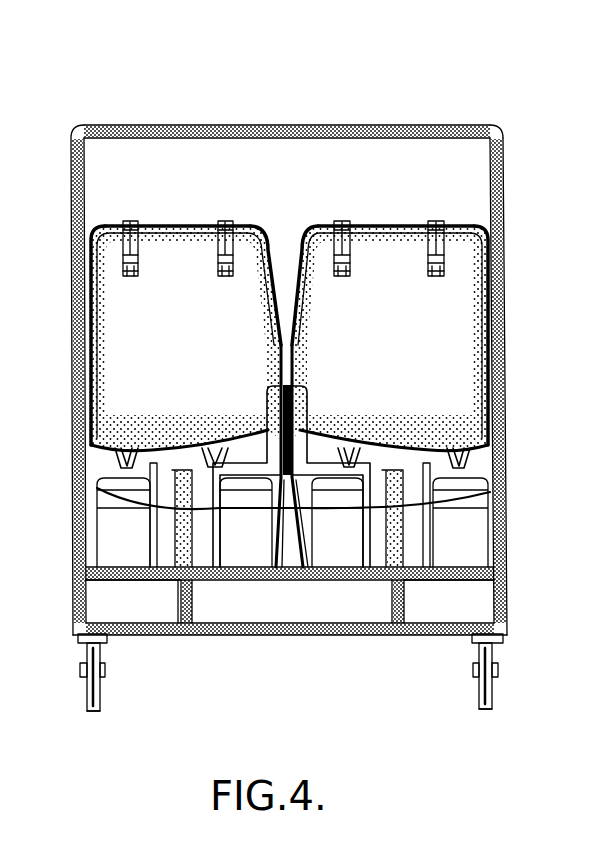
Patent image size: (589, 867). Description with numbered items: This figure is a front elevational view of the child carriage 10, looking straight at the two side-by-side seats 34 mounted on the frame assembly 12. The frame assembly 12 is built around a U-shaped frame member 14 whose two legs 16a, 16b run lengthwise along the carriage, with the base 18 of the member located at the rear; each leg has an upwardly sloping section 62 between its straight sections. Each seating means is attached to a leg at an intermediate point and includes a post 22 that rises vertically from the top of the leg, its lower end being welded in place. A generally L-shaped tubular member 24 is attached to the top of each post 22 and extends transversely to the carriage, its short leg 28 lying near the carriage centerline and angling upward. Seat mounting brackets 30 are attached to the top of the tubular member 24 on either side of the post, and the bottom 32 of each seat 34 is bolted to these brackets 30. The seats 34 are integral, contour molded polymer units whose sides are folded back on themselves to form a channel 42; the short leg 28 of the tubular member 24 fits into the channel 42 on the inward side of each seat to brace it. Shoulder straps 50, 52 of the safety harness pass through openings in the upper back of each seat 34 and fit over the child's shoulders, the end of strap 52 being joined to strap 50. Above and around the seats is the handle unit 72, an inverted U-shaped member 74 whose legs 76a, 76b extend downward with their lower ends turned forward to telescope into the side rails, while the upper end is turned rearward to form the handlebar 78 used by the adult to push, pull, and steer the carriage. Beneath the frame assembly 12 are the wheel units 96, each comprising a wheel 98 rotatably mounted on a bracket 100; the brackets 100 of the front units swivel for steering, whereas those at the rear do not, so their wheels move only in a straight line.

The seating unit assembly 10 is at (306, 98).
The frame assembly 12 is at (294, 672).
The U-shaped frame member 14 is at (295, 595).
The leg 16a is at (418, 580).
The leg 16b is at (180, 574).
The base 18 is at (362, 582).
The post 22 is at (97, 493).
The tubular member 24 is at (253, 500).
The short leg 28 is at (268, 400).
The seat mounting bracket 30 is at (210, 447).
The seat bottom 32 is at (181, 222).
The seat 34 is at (125, 315).
The channel 42 is at (279, 384).
The strap 50 is at (225, 220).
The strap 52 is at (125, 220).
The upwardly sloping section 62 is at (178, 612).
The handle unit 72 is at (192, 100).
The inverted U-shaped member 74 is at (369, 122).
The leg 76a is at (505, 200).
The leg 76b is at (71, 260).
The handlebar 78 is at (461, 96).
The wheel unit 96 is at (90, 720).
The wheel 98 is at (88, 698).
The bracket 100 is at (78, 640).